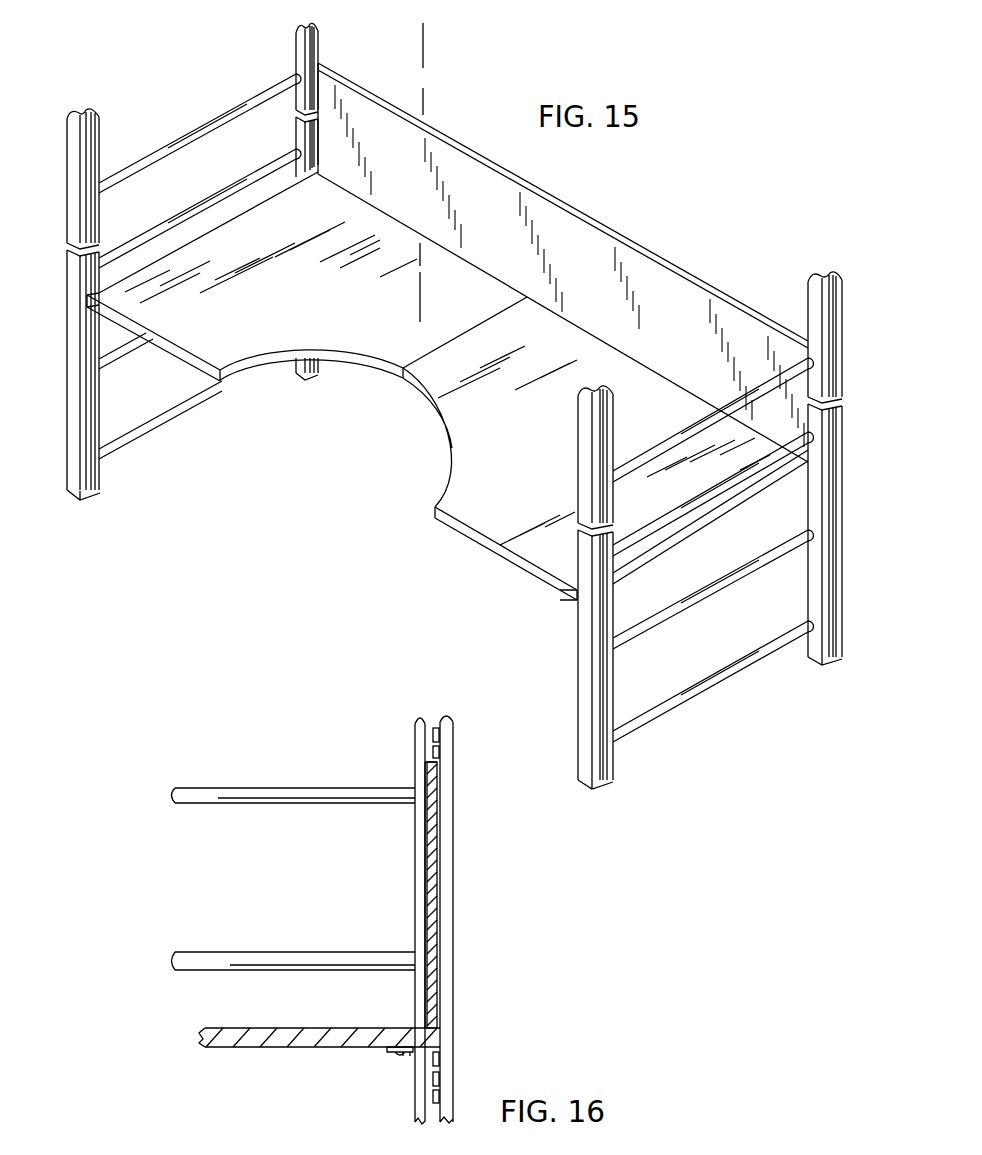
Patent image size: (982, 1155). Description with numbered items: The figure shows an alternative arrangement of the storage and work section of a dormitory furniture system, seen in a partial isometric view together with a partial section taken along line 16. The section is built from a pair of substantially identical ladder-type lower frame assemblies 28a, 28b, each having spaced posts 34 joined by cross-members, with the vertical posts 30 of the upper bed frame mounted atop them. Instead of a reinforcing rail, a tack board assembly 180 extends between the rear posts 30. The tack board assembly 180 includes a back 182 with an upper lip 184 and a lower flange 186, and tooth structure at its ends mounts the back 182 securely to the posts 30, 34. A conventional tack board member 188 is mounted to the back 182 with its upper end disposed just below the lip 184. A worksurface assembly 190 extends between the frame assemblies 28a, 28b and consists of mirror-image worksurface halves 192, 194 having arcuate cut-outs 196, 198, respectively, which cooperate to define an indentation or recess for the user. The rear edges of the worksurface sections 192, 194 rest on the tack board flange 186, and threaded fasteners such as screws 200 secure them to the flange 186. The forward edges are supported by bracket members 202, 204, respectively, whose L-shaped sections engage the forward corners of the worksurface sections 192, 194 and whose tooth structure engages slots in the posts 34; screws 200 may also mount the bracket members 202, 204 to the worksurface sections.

In FIG. 15, the section line 16 is at (460, 70).
In FIG. 15, the lower frame assembly 28a is at (184, 110).
In FIG. 15, the lower frame assembly 28b is at (738, 718).
In FIG. 15, the vertical post 30 is at (337, 38).
In FIG. 15, the post 34 is at (67, 422).
In FIG. 15, the tack board assembly 180 is at (626, 235).
In FIG. 16, the tack board assembly 180 is at (452, 860).
In FIG. 16, the back 182 is at (442, 935).
In FIG. 16, the upper lip 184 is at (425, 756).
In FIG. 16, the lower flange 186 is at (393, 1050).
In FIG. 16, the tack board member 188 is at (432, 835).
In FIG. 15, the worksurface assembly 190 is at (447, 391).
In FIG. 15, the worksurface half 192 is at (189, 370).
In FIG. 16, the worksurface half 192 is at (227, 1028).
In FIG. 15, the worksurface half 194 is at (510, 565).
In FIG. 15, the arcuate cut-out 196 is at (336, 358).
In FIG. 15, the arcuate cut-out 198 is at (446, 445).
In FIG. 16, the screw 200 is at (407, 1056).
In FIG. 15, the bracket member 202 is at (80, 317).
In FIG. 15, the bracket member 204 is at (572, 598).